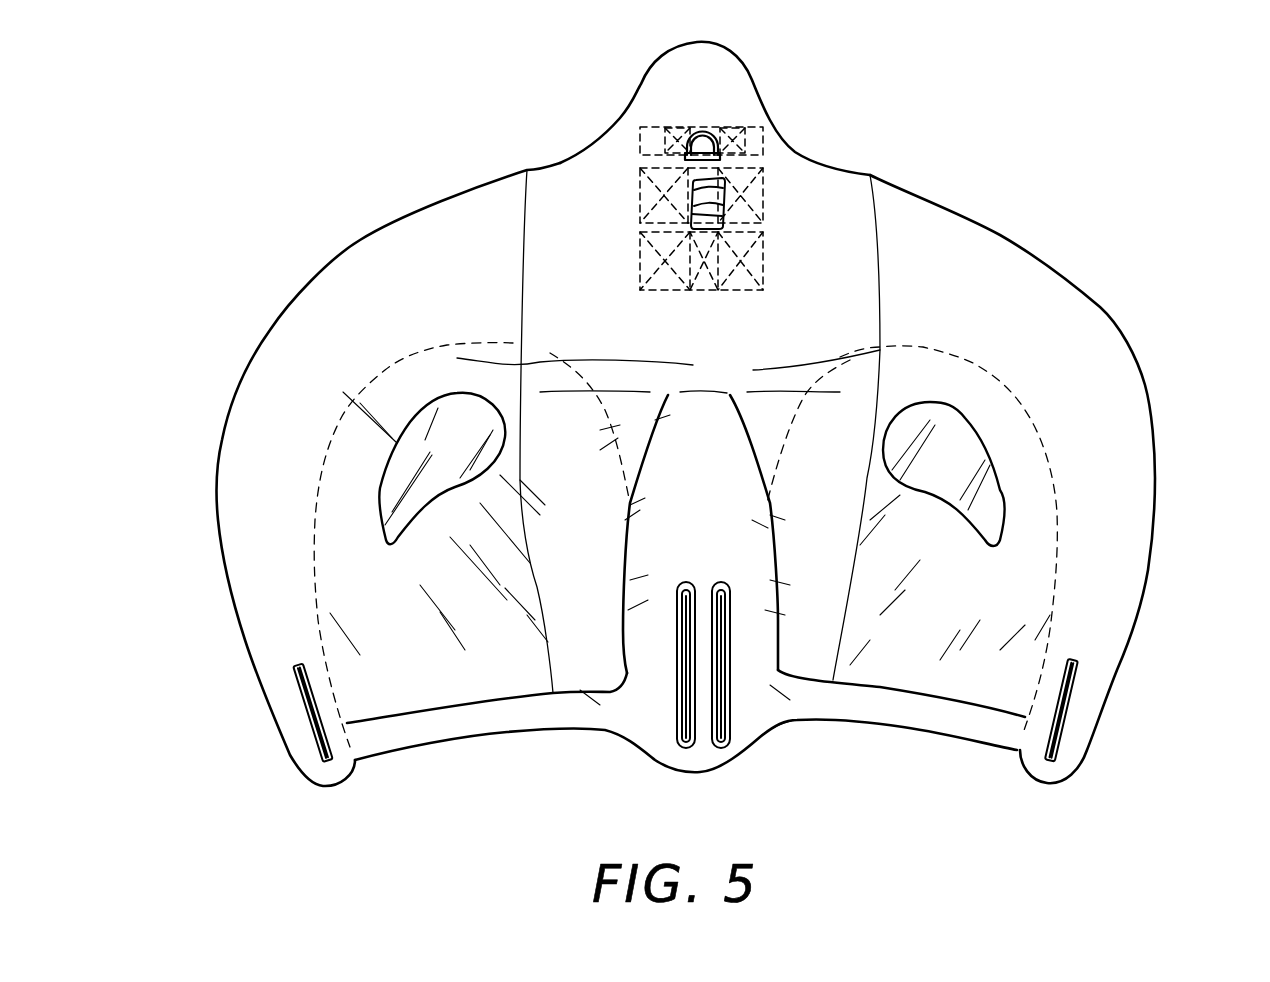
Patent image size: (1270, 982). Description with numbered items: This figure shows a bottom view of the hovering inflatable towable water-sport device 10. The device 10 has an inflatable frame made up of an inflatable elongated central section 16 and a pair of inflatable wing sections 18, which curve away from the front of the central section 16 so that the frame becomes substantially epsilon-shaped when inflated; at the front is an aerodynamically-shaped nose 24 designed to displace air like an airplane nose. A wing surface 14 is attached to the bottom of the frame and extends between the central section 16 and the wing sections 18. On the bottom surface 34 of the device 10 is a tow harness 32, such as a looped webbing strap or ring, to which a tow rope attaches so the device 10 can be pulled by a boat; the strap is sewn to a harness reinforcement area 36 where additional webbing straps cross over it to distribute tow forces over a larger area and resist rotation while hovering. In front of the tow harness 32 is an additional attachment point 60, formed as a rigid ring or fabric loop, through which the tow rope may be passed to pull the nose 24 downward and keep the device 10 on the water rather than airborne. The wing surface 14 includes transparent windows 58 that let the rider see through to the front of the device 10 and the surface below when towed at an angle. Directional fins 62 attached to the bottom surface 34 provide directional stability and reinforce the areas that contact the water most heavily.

The inflatable towable water-sport device 10 is at (729, 405).
The wing surface 14 is at (357, 581).
The inflatable elongated central section 16 is at (790, 725).
The inflatable wing sections 18 is at (1117, 525).
The front nose 24 is at (737, 70).
The tow harness 32 is at (727, 197).
The bottom surface 34 is at (327, 305).
The harness reinforcement area 36 is at (740, 170).
The transparent window 58 is at (397, 457).
The additional attachment point 60 is at (687, 147).
The directional fins 62 is at (307, 713).